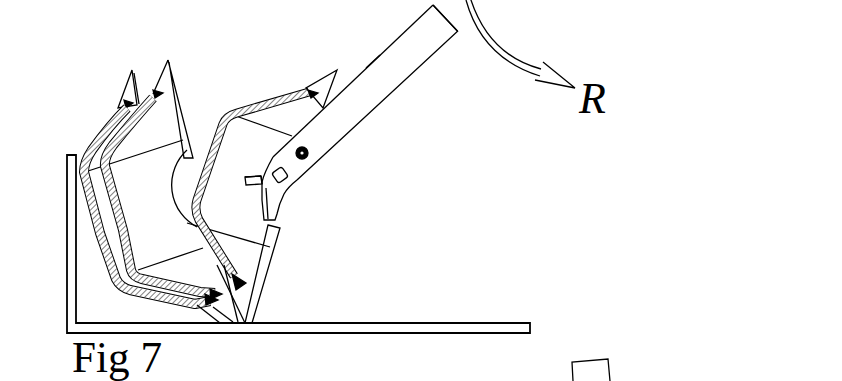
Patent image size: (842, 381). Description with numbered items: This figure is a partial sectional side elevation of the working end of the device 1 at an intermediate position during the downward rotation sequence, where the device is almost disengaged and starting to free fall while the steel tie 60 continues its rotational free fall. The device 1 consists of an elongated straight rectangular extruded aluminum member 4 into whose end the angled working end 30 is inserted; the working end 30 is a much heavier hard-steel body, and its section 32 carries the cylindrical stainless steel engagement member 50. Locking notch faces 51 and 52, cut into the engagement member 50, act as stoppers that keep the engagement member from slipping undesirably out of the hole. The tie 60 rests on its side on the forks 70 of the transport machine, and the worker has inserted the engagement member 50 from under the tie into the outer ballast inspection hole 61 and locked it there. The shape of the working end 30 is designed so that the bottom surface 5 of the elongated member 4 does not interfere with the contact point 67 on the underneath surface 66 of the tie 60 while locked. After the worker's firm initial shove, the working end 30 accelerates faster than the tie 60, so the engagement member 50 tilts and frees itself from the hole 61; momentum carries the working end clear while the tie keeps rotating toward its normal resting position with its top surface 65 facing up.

The device 1 is at (460, 78).
The elongated straight rectangular extruded aluminum member 4 is at (385, 80).
The bottom surface of elongated member 5 is at (410, 27).
The working end assembly 30 is at (297, 197).
The working end section 32 is at (272, 203).
The engagement member 50 is at (246, 181).
The notch face 51 is at (254, 178).
The notch face 52 is at (259, 180).
The tie 60 is at (325, 75).
The outer ballast inspection hole 61 is at (203, 163).
The top surface of tie 65 is at (190, 193).
The underneath surface of tie 66 is at (244, 277).
The contact point 67 is at (375, 58).
The forks 70 is at (67, 293).